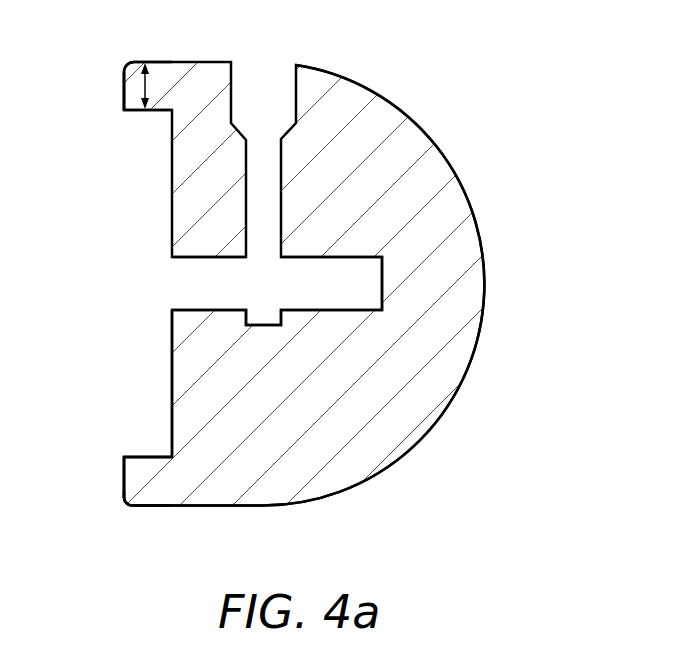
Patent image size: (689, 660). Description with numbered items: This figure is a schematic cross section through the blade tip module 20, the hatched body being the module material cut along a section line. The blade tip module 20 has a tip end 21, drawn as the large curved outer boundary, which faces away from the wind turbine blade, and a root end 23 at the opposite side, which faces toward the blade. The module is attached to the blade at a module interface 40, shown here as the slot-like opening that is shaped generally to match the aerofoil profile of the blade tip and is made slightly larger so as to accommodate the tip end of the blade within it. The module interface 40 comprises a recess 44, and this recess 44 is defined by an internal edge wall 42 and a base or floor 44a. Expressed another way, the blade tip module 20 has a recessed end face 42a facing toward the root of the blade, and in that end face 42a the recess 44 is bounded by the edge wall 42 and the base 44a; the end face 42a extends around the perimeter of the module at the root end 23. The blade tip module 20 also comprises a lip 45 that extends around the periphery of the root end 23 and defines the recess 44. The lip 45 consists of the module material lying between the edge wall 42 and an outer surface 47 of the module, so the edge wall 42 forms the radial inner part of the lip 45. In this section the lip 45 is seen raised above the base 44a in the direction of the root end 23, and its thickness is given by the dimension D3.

The blade tip module 20 is at (487, 117).
The tip end 21 is at (485, 287).
The root end 23 is at (123, 485).
The module interface 40 is at (147, 287).
The edge wall 42 is at (138, 111).
The end face 42a is at (123, 88).
The recess 44 is at (147, 207).
The base 44a is at (172, 360).
The lip 45 is at (150, 493).
The outer surface 47 is at (241, 507).
The lip thickness D3 is at (148, 82).